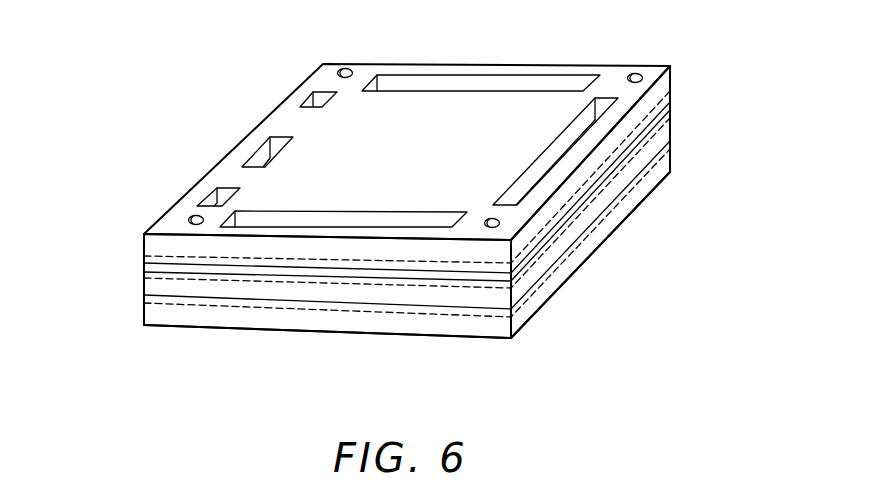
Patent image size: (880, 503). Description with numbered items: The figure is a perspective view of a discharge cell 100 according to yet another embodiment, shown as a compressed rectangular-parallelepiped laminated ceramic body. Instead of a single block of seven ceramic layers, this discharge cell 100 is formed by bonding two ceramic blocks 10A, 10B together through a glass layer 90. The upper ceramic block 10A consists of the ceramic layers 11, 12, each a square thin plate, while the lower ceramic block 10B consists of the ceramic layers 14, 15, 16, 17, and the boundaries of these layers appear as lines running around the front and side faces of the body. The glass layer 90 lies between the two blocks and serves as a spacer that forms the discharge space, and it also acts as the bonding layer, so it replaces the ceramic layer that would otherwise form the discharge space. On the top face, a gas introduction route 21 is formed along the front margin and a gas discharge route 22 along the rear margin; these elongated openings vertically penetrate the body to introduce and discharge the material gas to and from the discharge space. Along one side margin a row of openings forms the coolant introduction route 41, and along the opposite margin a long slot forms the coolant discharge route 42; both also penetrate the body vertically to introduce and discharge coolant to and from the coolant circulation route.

The discharge cell 100 is at (302, 339).
The ceramic block 10A is at (138, 250).
The ceramic block 10B is at (174, 330).
The ceramic layer 11 is at (662, 88).
The ceramic layer 12 is at (673, 107).
The glass layer 90 is at (657, 122).
The ceramic layer 14 is at (458, 280).
The ceramic layer 15 is at (412, 298).
The ceramic layer 16 is at (602, 215).
The ceramic layer 17 is at (575, 262).
The gas introduction route 21 is at (336, 216).
The gas discharge route 22 is at (460, 78).
The coolant introduction route 41 is at (315, 92).
The coolant discharge route 42 is at (605, 100).